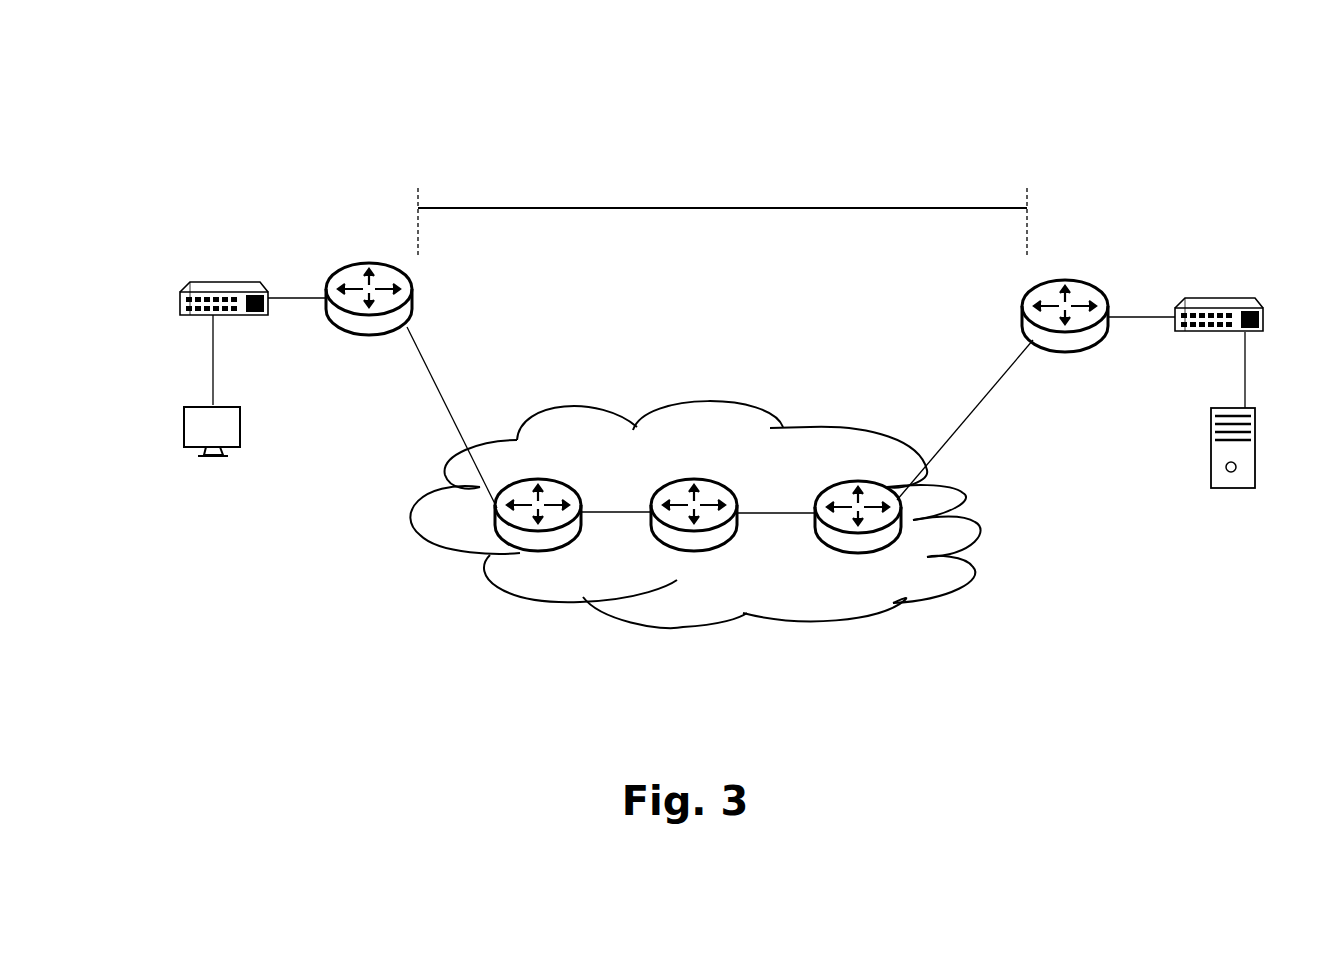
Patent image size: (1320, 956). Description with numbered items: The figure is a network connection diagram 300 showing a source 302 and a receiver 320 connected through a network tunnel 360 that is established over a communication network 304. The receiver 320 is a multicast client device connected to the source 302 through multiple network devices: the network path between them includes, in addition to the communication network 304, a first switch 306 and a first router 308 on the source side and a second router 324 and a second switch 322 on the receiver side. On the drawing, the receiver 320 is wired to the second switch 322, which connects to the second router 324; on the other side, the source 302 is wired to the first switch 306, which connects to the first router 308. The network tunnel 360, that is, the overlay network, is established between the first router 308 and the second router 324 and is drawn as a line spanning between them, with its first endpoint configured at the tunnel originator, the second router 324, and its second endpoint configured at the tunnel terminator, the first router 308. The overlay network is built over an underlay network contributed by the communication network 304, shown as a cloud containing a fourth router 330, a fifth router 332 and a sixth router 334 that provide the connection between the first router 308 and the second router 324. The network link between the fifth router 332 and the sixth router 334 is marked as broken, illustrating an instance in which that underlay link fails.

The network connection diagram 300 is at (228, 112).
The source 302 is at (1230, 490).
The communication network 304 is at (763, 627).
The first switch 306 is at (1200, 333).
The first router 308 is at (1070, 352).
The receiver 320 is at (209, 460).
The second switch 322 is at (185, 318).
The second router 324 is at (376, 340).
The fourth router 330 is at (545, 478).
The fifth router 332 is at (688, 478).
The sixth router 334 is at (843, 482).
The network tunnel 360 is at (719, 210).